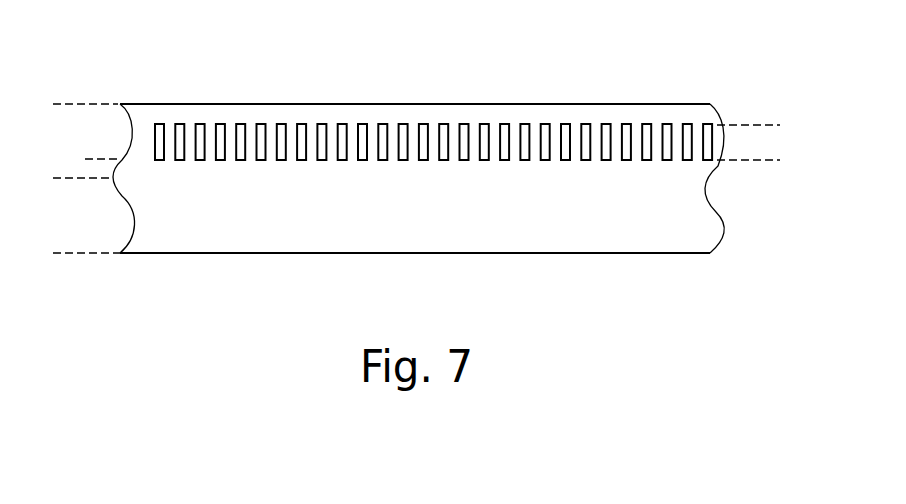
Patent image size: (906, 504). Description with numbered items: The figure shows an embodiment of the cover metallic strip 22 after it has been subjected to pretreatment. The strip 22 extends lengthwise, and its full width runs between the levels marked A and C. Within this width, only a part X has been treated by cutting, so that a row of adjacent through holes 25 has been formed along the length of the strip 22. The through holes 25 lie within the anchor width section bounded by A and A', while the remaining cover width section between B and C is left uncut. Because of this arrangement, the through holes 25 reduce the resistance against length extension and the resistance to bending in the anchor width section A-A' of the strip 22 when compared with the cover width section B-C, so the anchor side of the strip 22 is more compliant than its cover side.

The cover metallic strip 22 is at (647, 254).
The through holes 25 is at (650, 123).
The edge of width A-C A is at (75, 104).
The boundary of anchor width section A' is at (88, 159).
The boundary of cover width section B is at (72, 179).
The edge of width A- C is at (76, 254).
The treated part of the width X is at (752, 142).